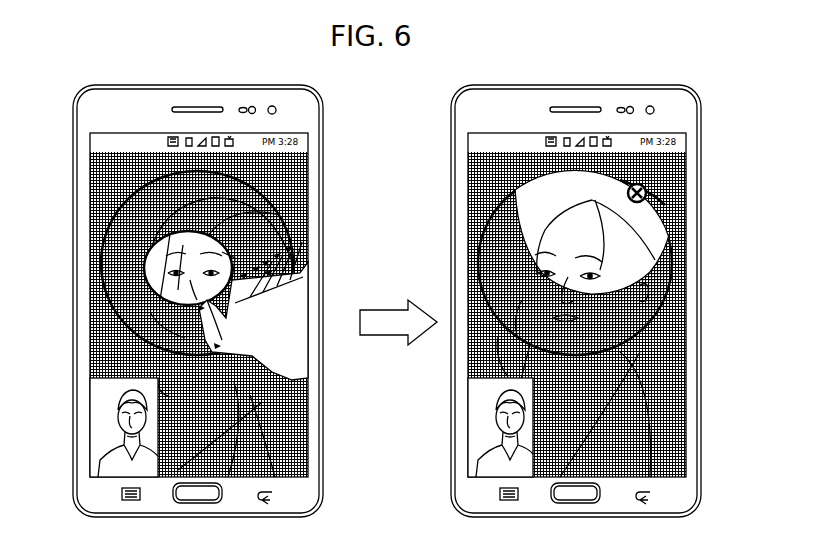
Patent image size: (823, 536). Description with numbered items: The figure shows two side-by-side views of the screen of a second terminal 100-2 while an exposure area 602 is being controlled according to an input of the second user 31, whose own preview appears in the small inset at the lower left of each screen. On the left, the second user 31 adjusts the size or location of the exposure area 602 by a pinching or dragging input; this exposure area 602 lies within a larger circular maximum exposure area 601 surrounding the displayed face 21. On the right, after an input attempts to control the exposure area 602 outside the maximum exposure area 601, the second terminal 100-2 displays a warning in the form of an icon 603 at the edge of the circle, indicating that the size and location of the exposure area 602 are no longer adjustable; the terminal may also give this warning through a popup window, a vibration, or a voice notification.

The second terminal 100-2 is at (255, 85).
The face of first user image 21 is at (283, 191).
The maximum exposure area 601 is at (288, 222).
The exposure area 602 is at (303, 277).
The icon 603 is at (650, 183).
The second user 31 is at (123, 423).